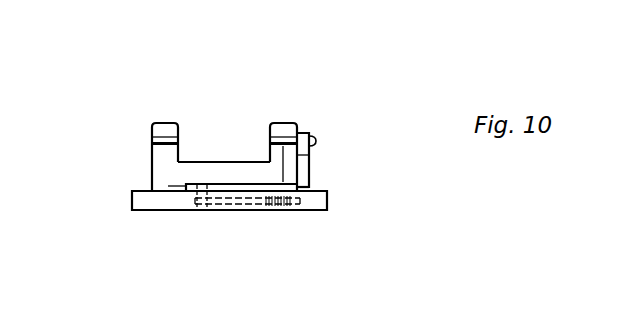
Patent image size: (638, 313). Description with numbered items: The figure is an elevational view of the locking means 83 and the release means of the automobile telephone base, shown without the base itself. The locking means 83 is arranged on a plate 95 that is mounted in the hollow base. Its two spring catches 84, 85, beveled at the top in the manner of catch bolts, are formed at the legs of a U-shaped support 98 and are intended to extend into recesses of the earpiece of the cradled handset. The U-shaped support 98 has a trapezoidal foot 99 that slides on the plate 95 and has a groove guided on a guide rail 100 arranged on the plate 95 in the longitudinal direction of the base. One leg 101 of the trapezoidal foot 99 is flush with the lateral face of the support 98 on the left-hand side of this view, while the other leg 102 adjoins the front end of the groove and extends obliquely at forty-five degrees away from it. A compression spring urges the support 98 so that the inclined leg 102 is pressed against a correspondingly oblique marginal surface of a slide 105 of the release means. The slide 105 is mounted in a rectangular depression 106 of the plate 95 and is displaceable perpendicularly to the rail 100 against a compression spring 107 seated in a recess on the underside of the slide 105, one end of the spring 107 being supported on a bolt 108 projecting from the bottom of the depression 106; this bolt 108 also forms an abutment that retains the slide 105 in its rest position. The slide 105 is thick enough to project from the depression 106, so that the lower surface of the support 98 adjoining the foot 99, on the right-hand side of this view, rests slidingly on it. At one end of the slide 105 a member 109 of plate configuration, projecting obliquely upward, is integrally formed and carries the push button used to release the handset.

The locking means 83 is at (128, 94).
The spring catch 84 is at (165, 131).
The spring catch 85 is at (287, 132).
The plate 95 is at (145, 202).
The U-shaped support 98 is at (220, 170).
The trapezoidal foot 99 is at (170, 189).
The guide rail 100 is at (198, 200).
The leg of the trapezoidal foot 101 is at (152, 188).
The inclined leg of the trapezoidal foot 102 is at (207, 192).
The slide 105 is at (300, 184).
The rectangular depression 106 is at (231, 183).
The compression spring 107 is at (284, 209).
The bolt 108 is at (260, 212).
The plate-configured member 109 is at (299, 163).